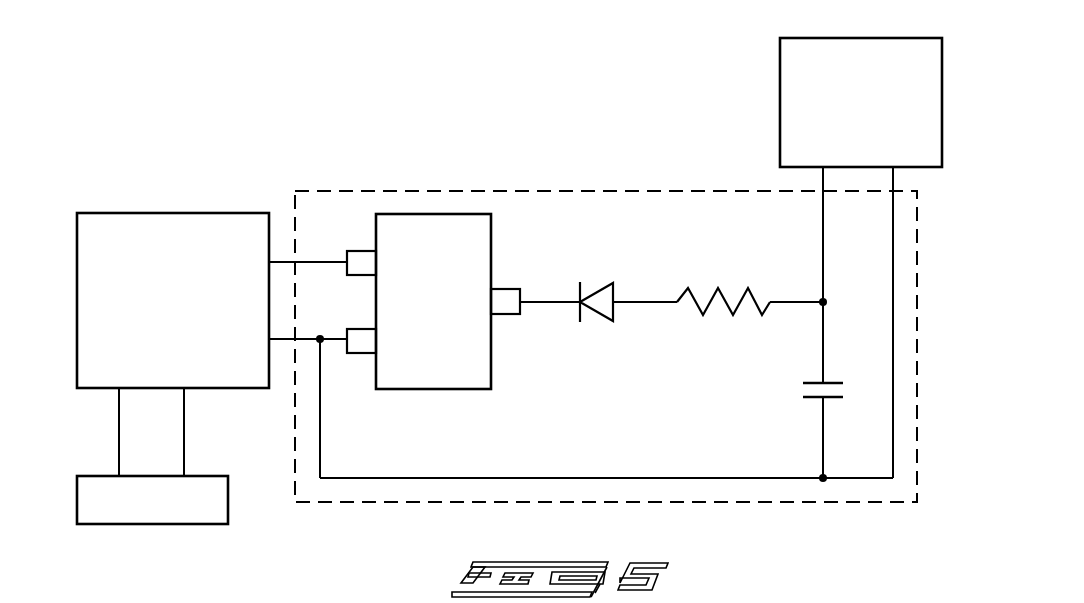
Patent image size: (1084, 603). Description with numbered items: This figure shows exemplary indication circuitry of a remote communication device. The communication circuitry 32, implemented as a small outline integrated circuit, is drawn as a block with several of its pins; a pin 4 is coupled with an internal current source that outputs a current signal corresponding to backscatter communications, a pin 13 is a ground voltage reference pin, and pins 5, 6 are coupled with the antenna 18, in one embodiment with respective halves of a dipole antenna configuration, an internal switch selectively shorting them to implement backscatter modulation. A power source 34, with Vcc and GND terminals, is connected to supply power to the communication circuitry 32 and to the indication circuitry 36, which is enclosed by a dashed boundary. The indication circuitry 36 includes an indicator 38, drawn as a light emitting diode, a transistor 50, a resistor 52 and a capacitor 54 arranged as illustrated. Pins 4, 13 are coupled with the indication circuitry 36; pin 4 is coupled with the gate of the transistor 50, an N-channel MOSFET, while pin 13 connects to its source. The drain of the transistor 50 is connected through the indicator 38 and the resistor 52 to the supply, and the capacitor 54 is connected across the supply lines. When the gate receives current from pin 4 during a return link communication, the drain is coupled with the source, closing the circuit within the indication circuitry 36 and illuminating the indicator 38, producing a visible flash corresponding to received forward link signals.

The communication circuitry 32 is at (166, 213).
The power source 34 is at (780, 93).
The indication circuitry 36 is at (533, 190).
The indicator 38 is at (595, 284).
The transistor 50 is at (462, 389).
The resistor 52 is at (695, 312).
The capacitor 54 is at (803, 391).
The antenna 18 is at (148, 524).
The pin 4 is at (292, 265).
The pin 13 is at (285, 343).
The pin 5 is at (119, 413).
The pin 6 is at (184, 413).